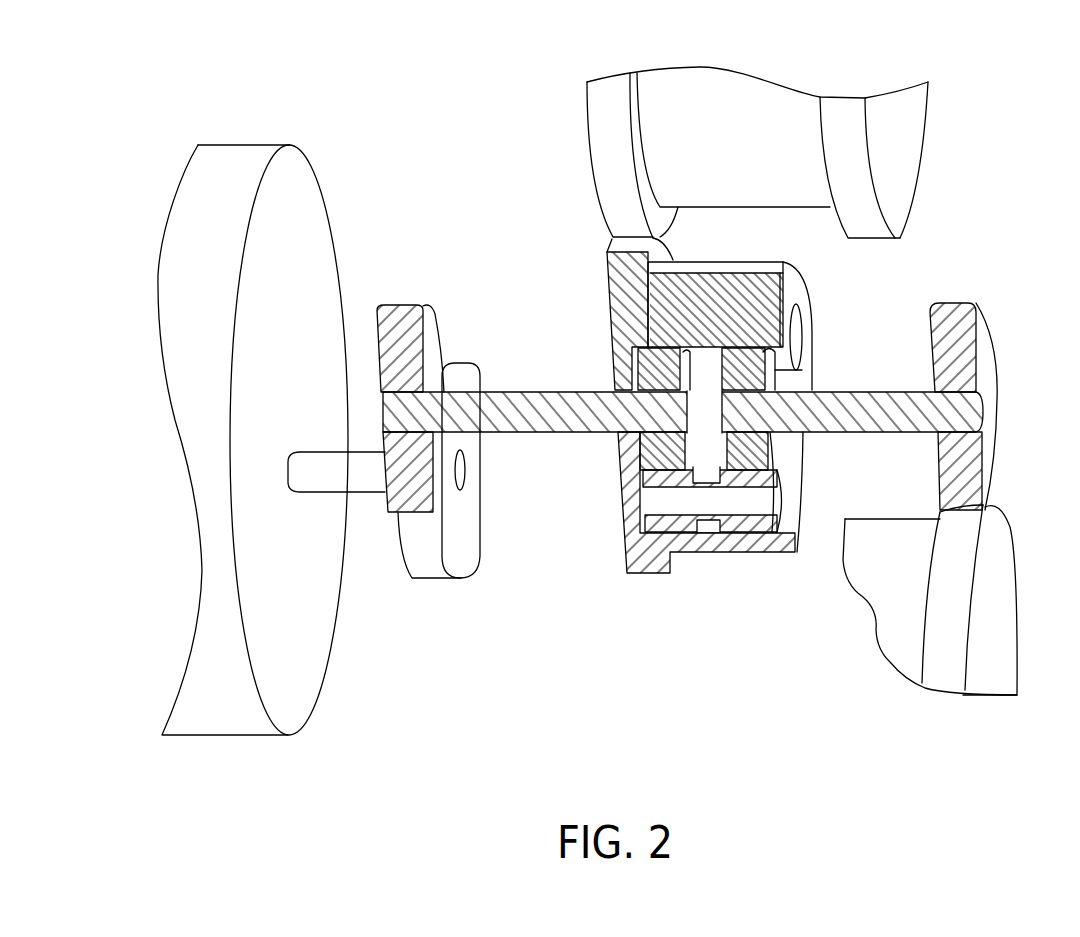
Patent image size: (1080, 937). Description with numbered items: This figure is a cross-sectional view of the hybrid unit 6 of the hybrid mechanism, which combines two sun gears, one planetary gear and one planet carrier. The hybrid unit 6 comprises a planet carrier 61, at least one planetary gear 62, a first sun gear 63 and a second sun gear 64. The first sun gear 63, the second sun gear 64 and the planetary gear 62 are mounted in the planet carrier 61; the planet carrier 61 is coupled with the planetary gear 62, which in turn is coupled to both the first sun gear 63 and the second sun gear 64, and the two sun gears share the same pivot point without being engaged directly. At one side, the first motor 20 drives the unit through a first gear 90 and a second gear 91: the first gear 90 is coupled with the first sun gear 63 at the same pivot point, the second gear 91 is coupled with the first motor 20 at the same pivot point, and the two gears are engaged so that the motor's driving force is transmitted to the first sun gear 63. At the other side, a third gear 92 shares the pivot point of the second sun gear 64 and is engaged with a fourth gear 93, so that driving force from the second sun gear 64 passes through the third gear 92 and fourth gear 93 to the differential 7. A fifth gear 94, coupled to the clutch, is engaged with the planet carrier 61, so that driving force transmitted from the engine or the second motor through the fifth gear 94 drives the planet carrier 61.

The first motor 20 is at (295, 722).
The first gear 90 is at (427, 317).
The second gear 91 is at (470, 377).
The fifth gear 94 is at (597, 110).
The hybrid unit 6 is at (568, 643).
The planet carrier 61 is at (650, 577).
The planetary gear 62 is at (747, 520).
The first sun gear 63 is at (658, 458).
The second sun gear 64 is at (853, 428).
The third gear 92 is at (963, 304).
The fourth gear 93 is at (908, 663).
The differential 7 is at (908, 663).